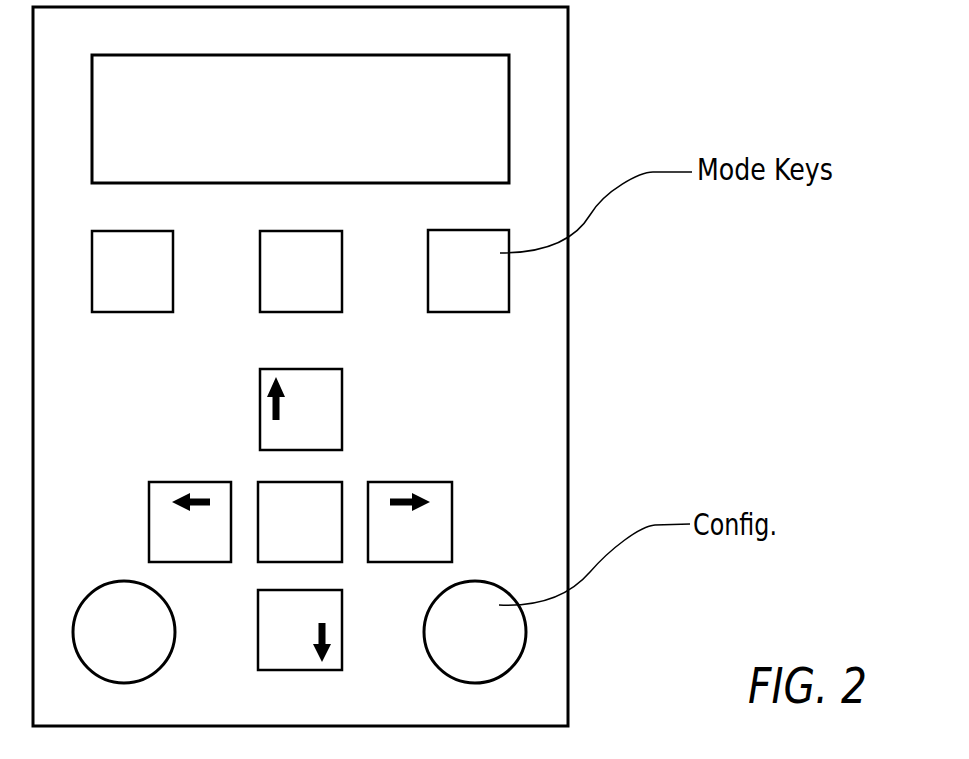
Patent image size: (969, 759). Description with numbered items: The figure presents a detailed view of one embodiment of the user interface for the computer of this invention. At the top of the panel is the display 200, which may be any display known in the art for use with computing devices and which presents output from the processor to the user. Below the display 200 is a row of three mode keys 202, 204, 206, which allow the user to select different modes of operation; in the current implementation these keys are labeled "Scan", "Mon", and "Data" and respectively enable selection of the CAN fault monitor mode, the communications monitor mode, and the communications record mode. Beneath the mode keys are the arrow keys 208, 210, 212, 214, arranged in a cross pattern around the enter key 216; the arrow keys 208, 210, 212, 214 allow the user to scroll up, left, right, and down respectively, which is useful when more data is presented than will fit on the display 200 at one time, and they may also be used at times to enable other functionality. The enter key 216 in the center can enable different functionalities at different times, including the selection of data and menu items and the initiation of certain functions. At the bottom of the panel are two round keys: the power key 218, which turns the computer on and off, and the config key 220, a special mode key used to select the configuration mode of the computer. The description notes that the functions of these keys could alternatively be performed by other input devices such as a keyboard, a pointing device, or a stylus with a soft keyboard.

The display 200 is at (300, 119).
The mode key 202 is at (132, 271).
The mode key 204 is at (301, 271).
The mode key 206 is at (468, 271).
The arrow key 208 is at (301, 409).
The arrow key 210 is at (190, 522).
The arrow key 212 is at (410, 522).
The arrow key 214 is at (300, 630).
The enter key 216 is at (300, 522).
The power key 218 is at (124, 632).
The config key 220 is at (475, 632).